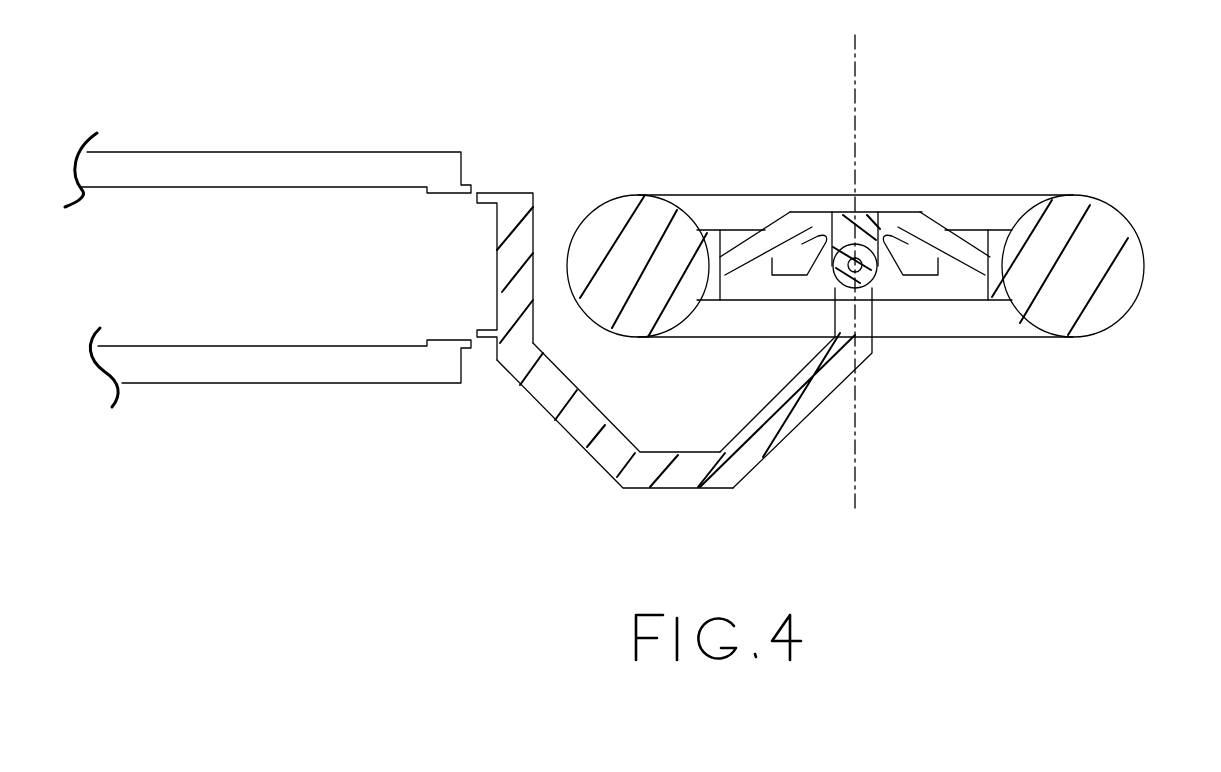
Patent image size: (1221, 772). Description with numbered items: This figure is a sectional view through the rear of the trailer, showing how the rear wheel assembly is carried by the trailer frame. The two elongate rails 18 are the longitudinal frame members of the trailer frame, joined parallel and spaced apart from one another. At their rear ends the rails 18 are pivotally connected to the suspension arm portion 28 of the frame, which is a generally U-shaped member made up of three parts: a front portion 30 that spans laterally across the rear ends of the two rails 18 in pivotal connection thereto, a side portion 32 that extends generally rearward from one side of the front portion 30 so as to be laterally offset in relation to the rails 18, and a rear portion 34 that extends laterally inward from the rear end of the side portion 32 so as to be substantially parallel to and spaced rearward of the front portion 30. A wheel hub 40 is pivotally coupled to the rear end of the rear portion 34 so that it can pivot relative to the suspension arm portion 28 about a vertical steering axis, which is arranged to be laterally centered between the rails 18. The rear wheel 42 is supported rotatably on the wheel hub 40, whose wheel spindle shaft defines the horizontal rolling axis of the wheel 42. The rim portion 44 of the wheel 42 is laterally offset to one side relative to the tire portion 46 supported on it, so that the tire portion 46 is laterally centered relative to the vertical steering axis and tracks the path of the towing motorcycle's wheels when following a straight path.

The elongate rails 18 is at (202, 170).
The suspension arm portion 28 is at (678, 394).
The front portion 30 is at (505, 270).
The side portion 32 is at (667, 488).
The rear portion 34 is at (870, 356).
The wheel hub 40 is at (862, 275).
The rear wheel 42 is at (883, 265).
The rim portion 44 is at (897, 227).
The tire portion 46 is at (1045, 205).